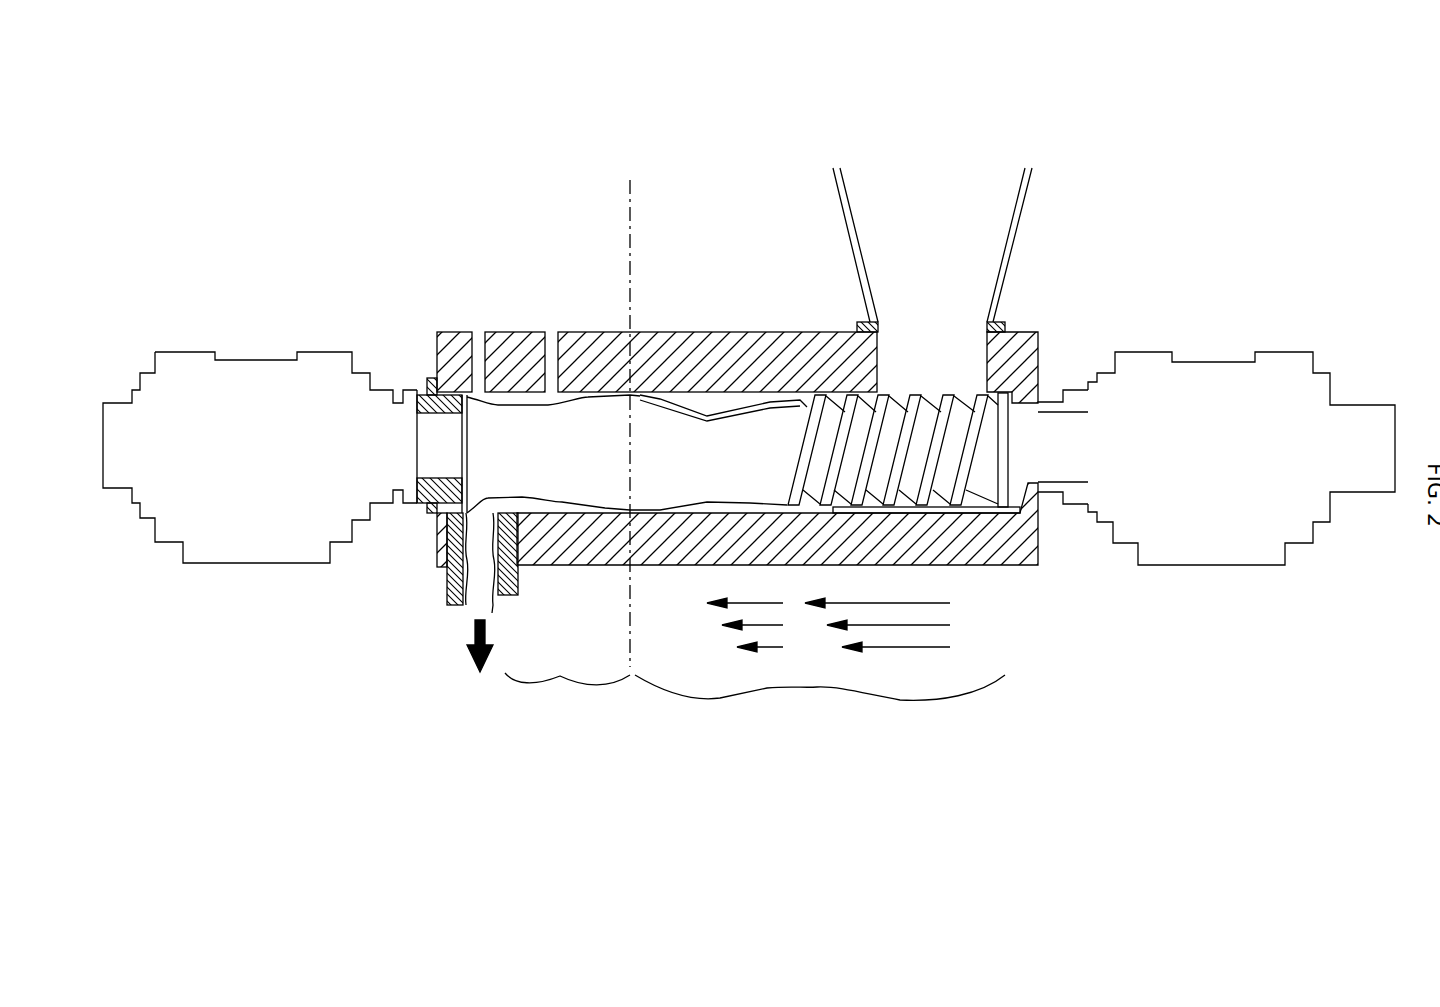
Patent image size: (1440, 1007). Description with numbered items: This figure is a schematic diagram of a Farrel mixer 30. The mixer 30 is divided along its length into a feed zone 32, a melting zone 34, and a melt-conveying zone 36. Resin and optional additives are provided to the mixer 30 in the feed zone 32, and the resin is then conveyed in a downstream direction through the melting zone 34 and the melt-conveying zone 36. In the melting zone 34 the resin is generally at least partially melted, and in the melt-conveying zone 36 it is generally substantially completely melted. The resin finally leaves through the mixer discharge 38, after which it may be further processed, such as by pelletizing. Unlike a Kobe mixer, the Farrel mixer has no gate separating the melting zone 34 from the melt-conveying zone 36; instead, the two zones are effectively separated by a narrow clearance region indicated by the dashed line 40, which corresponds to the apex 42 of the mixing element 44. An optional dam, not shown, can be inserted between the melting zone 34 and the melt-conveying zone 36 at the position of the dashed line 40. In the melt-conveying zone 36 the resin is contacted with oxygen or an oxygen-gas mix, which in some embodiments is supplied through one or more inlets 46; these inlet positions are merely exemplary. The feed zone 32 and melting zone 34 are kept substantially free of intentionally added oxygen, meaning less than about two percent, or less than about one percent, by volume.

The Farrel mixer 30 is at (1128, 205).
The feed zone 32 is at (948, 200).
The melting zone 34 is at (817, 688).
The melt-conveying zone 36 is at (560, 676).
The mixer discharge 38 is at (466, 605).
The dashed line 40 is at (633, 203).
The apex 42 is at (627, 507).
The mixing element 44 is at (770, 452).
The inlets 46 is at (550, 333).